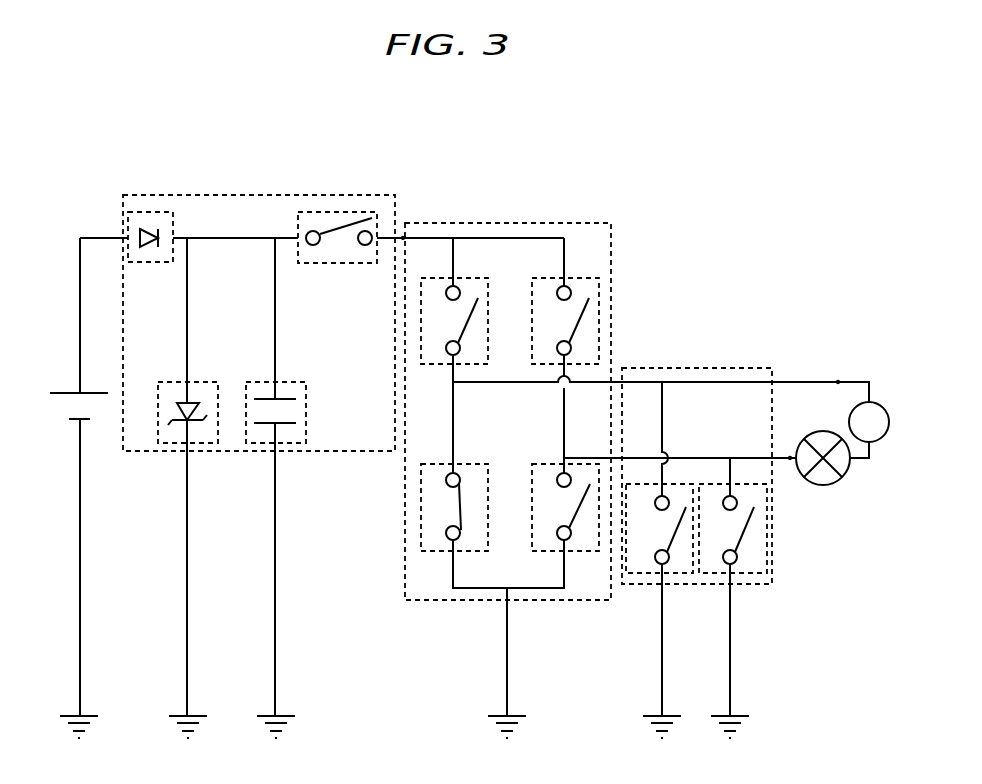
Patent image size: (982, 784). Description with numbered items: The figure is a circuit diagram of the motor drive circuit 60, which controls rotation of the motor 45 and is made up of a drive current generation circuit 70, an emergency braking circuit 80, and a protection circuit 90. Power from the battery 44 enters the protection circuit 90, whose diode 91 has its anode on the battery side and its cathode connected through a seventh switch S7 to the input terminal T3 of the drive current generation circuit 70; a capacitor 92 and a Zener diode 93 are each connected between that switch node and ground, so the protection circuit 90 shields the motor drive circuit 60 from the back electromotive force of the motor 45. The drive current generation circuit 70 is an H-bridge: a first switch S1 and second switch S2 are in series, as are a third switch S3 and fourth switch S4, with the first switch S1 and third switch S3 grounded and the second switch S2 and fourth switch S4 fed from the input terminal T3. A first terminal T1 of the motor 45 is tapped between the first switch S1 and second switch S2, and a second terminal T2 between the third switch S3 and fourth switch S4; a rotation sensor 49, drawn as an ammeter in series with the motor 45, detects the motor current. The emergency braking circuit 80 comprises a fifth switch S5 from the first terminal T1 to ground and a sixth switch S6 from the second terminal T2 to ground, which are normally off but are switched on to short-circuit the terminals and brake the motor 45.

The battery 44 is at (70, 392).
The motor 45 is at (818, 487).
The rotation sensor 49 is at (876, 401).
The motor drive circuit 60 is at (655, 197).
The drive current generation circuit 70 is at (517, 222).
The emergency braking circuit 80 is at (715, 367).
The protection circuit 90 is at (280, 194).
The diode 91 is at (150, 211).
The capacitor 92 is at (259, 446).
The Zener diode 93 is at (168, 446).
The first switch S1 is at (434, 553).
The second switch S2 is at (442, 277).
The third switch S3 is at (581, 553).
The fourth switch S4 is at (582, 277).
The fifth switch S5 is at (640, 575).
The sixth switch S6 is at (708, 575).
The seventh switch S7 is at (338, 211).
The first terminal T1 is at (838, 380).
The second terminal T2 is at (790, 455).
The input terminal T3 is at (403, 235).